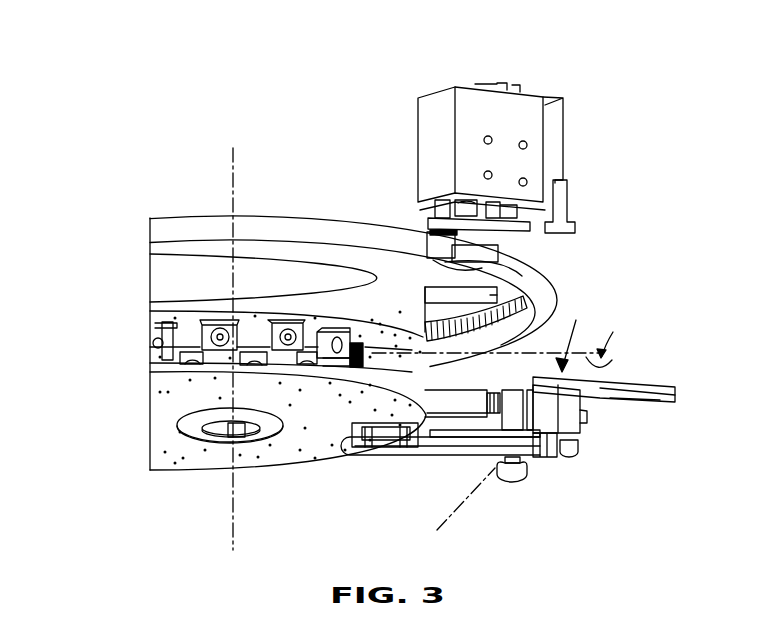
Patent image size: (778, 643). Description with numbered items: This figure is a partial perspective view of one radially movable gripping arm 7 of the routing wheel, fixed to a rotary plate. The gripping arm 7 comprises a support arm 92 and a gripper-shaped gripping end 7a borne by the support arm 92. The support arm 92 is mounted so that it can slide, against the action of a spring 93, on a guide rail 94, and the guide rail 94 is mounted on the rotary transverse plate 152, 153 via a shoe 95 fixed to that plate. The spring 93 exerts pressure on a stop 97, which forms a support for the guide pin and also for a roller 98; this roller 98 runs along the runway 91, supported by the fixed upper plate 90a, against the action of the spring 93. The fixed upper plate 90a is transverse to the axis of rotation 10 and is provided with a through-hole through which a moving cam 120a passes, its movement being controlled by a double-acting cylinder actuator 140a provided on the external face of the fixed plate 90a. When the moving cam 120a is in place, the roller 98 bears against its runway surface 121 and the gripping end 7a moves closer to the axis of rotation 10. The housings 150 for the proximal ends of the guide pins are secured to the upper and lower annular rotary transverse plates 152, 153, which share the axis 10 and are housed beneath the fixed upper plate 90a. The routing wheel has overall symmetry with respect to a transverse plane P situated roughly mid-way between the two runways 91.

The axis of rotation 10 is at (238, 533).
The fixed upper plate 90a is at (340, 232).
The runway 91 is at (427, 327).
The upper rotary transverse plate 152 is at (197, 302).
The housings 150 is at (165, 318).
The lower rotary transverse plate 153 is at (287, 465).
The double-acting cylinder actuator 140a is at (478, 103).
The moving cam 120a is at (522, 272).
The runway surface 121 is at (447, 268).
The gripping arm 7 is at (486, 335).
The transverse plane P is at (606, 337).
The gripping end 7a is at (644, 378).
The support arm 92 is at (586, 423).
The stop 97 is at (510, 397).
The spring 93 is at (453, 412).
The guide rail 94 is at (430, 450).
The shoe 95 is at (395, 437).
The roller 98 is at (527, 477).